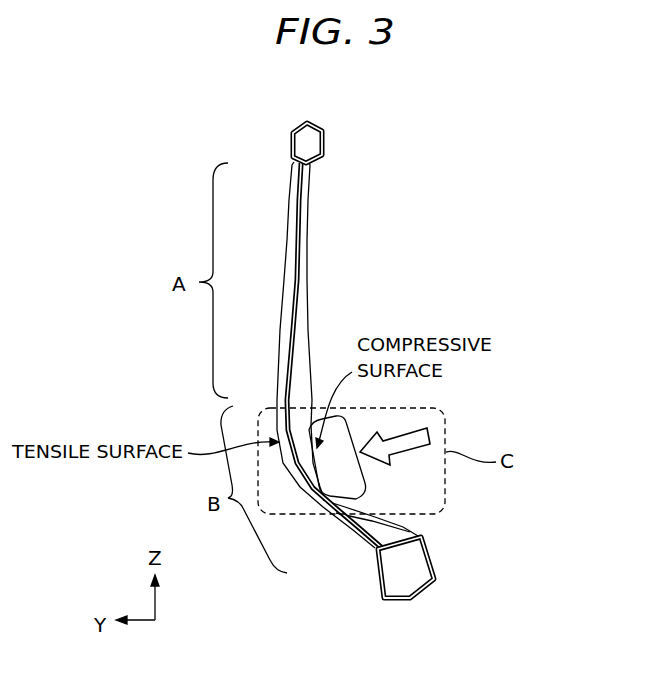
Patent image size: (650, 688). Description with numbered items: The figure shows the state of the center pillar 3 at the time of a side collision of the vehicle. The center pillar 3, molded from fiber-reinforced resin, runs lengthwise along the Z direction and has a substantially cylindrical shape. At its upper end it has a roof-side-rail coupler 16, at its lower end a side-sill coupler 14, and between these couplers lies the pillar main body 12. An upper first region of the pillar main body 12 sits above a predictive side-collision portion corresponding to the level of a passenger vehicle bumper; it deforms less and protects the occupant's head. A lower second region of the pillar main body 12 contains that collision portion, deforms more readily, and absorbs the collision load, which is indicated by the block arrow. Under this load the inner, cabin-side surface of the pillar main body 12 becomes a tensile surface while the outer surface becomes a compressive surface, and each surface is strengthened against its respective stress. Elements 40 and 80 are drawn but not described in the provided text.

The center pillar 3 is at (366, 154).
The pillar main body 12 is at (317, 263).
The side-sill coupler 14 is at (436, 566).
The roof-side-rail coupler 16 is at (323, 129).
The core layer 40 is at (302, 323).
The strain sensor 80 is at (343, 421).